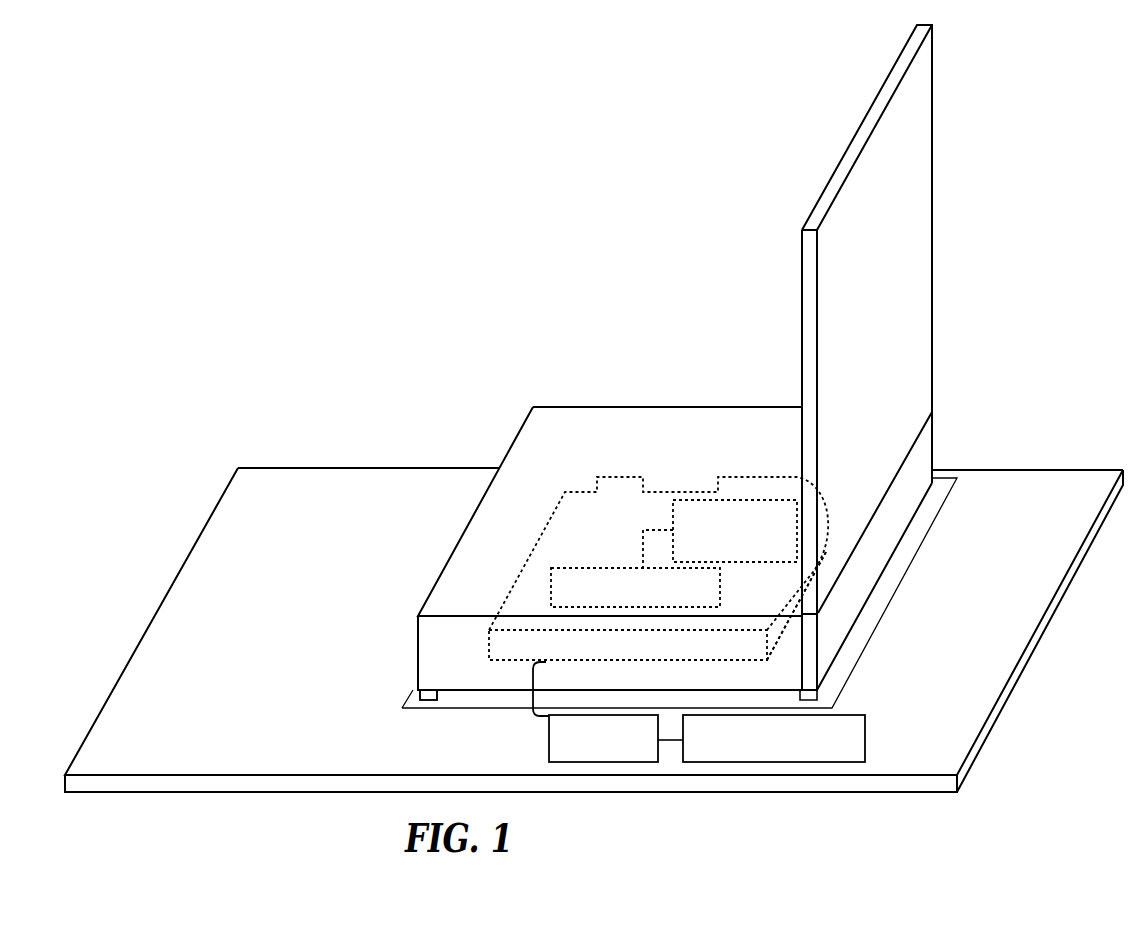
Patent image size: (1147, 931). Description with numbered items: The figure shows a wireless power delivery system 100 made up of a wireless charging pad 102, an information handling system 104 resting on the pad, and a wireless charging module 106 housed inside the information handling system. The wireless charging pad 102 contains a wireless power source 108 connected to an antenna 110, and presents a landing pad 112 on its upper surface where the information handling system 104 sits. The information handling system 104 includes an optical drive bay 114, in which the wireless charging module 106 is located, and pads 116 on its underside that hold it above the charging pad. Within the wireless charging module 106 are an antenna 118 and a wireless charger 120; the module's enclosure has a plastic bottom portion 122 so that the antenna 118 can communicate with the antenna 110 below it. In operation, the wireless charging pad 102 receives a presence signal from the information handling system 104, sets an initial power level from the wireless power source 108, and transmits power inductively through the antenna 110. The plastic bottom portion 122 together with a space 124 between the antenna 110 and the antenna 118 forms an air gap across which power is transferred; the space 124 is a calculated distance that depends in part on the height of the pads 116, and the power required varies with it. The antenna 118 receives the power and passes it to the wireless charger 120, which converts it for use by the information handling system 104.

The wireless power delivery system 100 is at (975, 253).
The wireless charging pad 102 is at (337, 517).
The information handling system 104 is at (802, 688).
The wireless charging module 106 is at (747, 655).
The wireless power source 108 is at (790, 756).
The antenna 110 is at (618, 756).
The landing pad 112 is at (934, 572).
The optical drive bay 114 is at (489, 648).
The pads 116 is at (420, 697).
The antenna 118 is at (687, 598).
The wireless charger 120 is at (785, 551).
The plastic bottom portion 122 is at (767, 657).
The space 124 is at (535, 667).